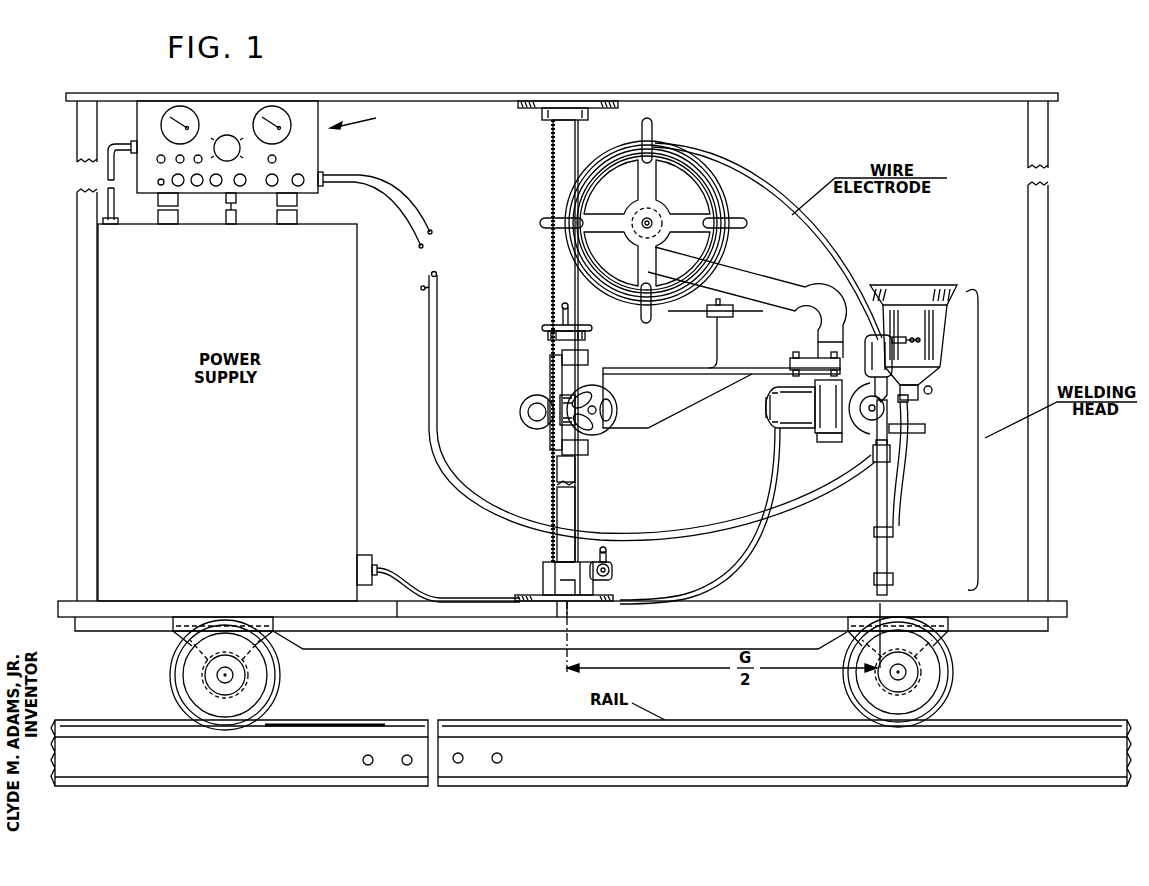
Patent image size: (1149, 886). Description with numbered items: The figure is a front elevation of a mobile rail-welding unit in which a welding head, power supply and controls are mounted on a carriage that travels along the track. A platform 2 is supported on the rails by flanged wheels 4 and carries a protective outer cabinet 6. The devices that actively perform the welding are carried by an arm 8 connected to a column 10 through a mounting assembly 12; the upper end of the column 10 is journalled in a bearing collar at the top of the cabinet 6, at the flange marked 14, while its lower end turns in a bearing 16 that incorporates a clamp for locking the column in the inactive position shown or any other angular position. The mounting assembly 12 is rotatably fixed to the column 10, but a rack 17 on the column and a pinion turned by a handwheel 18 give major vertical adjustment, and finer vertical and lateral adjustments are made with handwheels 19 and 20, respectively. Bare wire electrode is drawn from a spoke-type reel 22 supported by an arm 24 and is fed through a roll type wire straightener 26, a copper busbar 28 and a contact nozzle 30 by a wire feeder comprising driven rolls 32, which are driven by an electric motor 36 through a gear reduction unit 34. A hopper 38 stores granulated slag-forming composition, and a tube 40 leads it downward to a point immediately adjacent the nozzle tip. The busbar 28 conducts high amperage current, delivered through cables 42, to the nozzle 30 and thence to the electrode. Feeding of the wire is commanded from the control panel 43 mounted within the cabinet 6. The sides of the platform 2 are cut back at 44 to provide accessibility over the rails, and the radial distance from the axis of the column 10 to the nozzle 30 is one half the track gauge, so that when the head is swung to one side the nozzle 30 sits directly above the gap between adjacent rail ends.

The platform 2 is at (795, 599).
The flanged wheels 4 is at (280, 689).
The cabinet 6 is at (75, 275).
The arm 8 is at (678, 407).
The column 10 is at (580, 512).
The mounting assembly 12 is at (533, 441).
The column top flange 14 is at (544, 121).
The bearing 16 is at (618, 572).
The rack 17 is at (552, 497).
The handwheel 18 is at (530, 396).
The handwheel 19 is at (592, 330).
The handwheel 20 is at (608, 432).
The wire reel 22 is at (653, 137).
The arm 24 is at (760, 280).
The wire straightener 26 is at (873, 350).
The copper busbar 28 is at (891, 456).
The contact nozzle 30 is at (876, 508).
The driven rolls 32 is at (867, 430).
The gear reduction unit 34 is at (840, 436).
The electric motor 36 is at (763, 426).
The hopper 38 is at (912, 290).
The tube 40 is at (897, 497).
The cables 42 is at (423, 246).
The control panel 43 is at (282, 146).
The cut back portion 44 is at (401, 620).